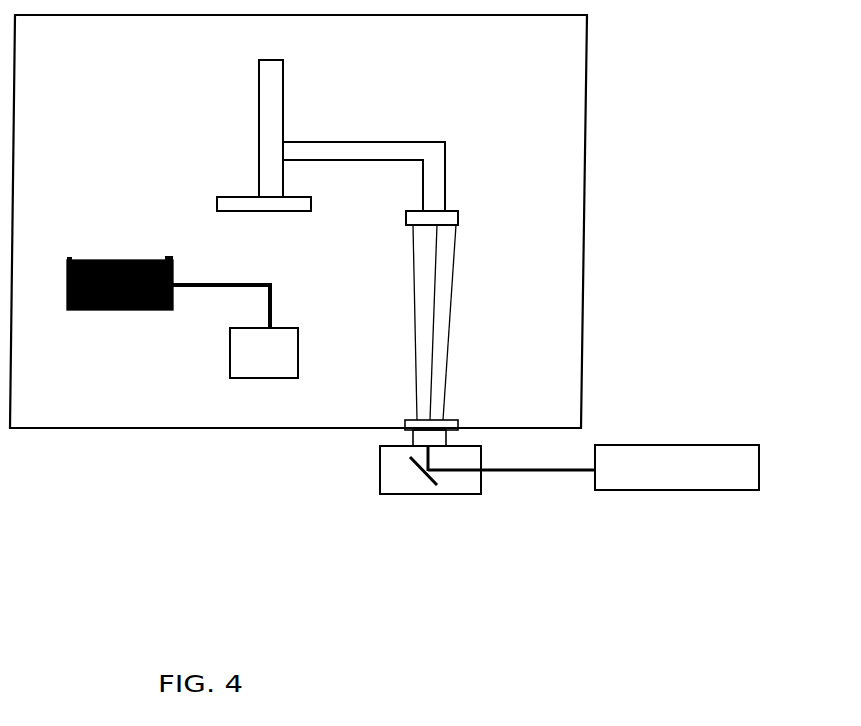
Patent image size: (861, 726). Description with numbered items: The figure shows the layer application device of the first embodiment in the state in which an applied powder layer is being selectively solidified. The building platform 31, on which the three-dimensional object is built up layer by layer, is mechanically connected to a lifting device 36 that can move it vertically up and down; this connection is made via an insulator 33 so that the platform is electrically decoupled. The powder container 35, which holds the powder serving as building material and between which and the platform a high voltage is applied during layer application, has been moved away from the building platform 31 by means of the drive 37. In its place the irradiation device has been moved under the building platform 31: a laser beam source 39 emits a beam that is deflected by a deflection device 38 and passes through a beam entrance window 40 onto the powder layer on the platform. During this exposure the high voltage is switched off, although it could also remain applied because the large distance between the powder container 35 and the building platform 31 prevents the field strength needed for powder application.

The building platform 31 is at (465, 215).
The insulator 33 is at (447, 180).
The powder container 35 is at (72, 312).
The lifting device 36 is at (258, 98).
The drive 37 is at (235, 331).
The deflection device 38 is at (487, 493).
The laser beam source 39 is at (677, 492).
The beam entrance window 40 is at (458, 420).